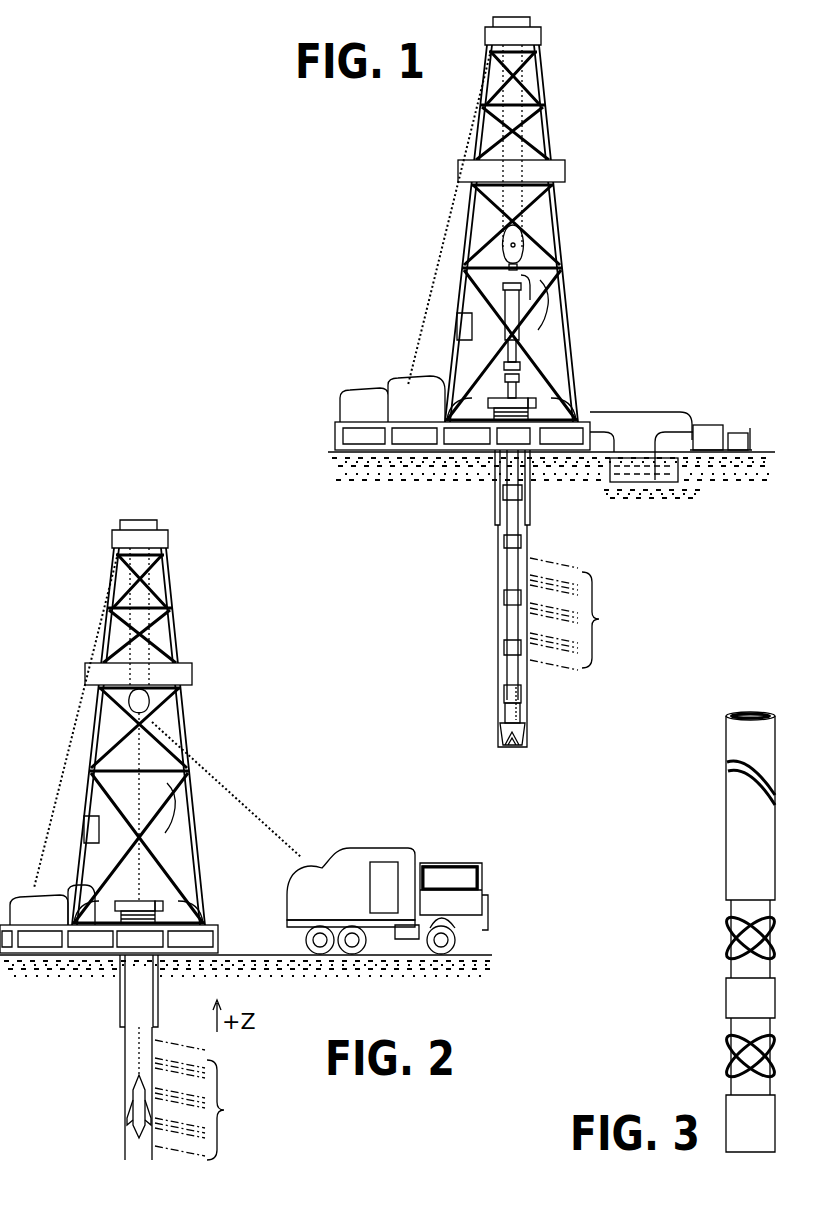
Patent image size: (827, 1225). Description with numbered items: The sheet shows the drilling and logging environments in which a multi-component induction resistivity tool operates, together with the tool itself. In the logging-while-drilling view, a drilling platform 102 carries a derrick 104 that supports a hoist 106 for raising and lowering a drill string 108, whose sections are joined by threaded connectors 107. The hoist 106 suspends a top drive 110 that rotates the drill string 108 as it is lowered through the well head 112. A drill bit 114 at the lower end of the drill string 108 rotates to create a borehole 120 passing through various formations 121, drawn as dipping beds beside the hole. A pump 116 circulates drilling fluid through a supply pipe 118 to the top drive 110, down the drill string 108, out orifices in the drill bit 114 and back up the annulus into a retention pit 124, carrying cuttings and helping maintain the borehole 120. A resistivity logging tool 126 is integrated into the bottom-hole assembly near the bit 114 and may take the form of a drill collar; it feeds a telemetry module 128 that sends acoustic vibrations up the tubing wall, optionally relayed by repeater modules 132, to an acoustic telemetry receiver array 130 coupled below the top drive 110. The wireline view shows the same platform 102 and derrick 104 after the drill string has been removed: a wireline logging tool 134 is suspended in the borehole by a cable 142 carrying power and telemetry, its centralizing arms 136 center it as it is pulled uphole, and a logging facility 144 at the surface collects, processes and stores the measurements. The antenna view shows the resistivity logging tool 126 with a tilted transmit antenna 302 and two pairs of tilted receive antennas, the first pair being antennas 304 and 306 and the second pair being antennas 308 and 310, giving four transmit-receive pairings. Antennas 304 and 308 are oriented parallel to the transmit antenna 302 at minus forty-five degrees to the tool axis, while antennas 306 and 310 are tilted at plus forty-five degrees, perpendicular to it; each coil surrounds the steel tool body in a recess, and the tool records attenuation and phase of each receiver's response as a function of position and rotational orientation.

In FIG. 1, the drilling platform 102 is at (336, 430).
In FIG. 2, the drilling platform 102 is at (218, 937).
In FIG. 1, the derrick 104 is at (540, 135).
In FIG. 2, the derrick 104 is at (205, 905).
In FIG. 1, the hoist 106 is at (520, 242).
In FIG. 2, the hoist 106 is at (148, 702).
In FIG. 1, the threaded connectors 107 is at (502, 544).
In FIG. 1, the drill string 108 is at (520, 570).
In FIG. 1, the top drive 110 is at (512, 305).
In FIG. 1, the well head 112 is at (528, 397).
In FIG. 2, the well head 112 is at (158, 900).
In FIG. 1, the drill bit 114 is at (516, 736).
In FIG. 1, the pump 116 is at (702, 428).
In FIG. 1, the supply pipe 118 is at (652, 410).
In FIG. 1, the borehole 120 is at (505, 587).
In FIG. 1, the formations 121 is at (583, 614).
In FIG. 2, the formations 121 is at (208, 1100).
In FIG. 1, the retention pit 124 is at (640, 480).
In FIG. 1, the resistivity logging tool 126 is at (506, 712).
In FIG. 3, the resistivity logging tool 126 is at (728, 725).
In FIG. 1, the telemetry module 128 is at (506, 694).
In FIG. 1, the acoustic telemetry receiver array 130 is at (512, 343).
In FIG. 1, the repeater modules 132 is at (506, 598).
In FIG. 2, the wireline logging tool 134 is at (137, 1097).
In FIG. 2, the centralizing arms 136 is at (130, 1115).
In FIG. 2, the cable 142 is at (205, 775).
In FIG. 2, the logging facility 144 is at (355, 848).
In FIG. 3, the tilted transmit antenna 302 is at (728, 768).
In FIG. 3, the tilted receive antenna 304 is at (730, 918).
In FIG. 3, the tilted receive antenna 306 is at (730, 950).
In FIG. 3, the tilted receive antenna 308 is at (730, 1040).
In FIG. 3, the tilted receive antenna 310 is at (730, 1070).